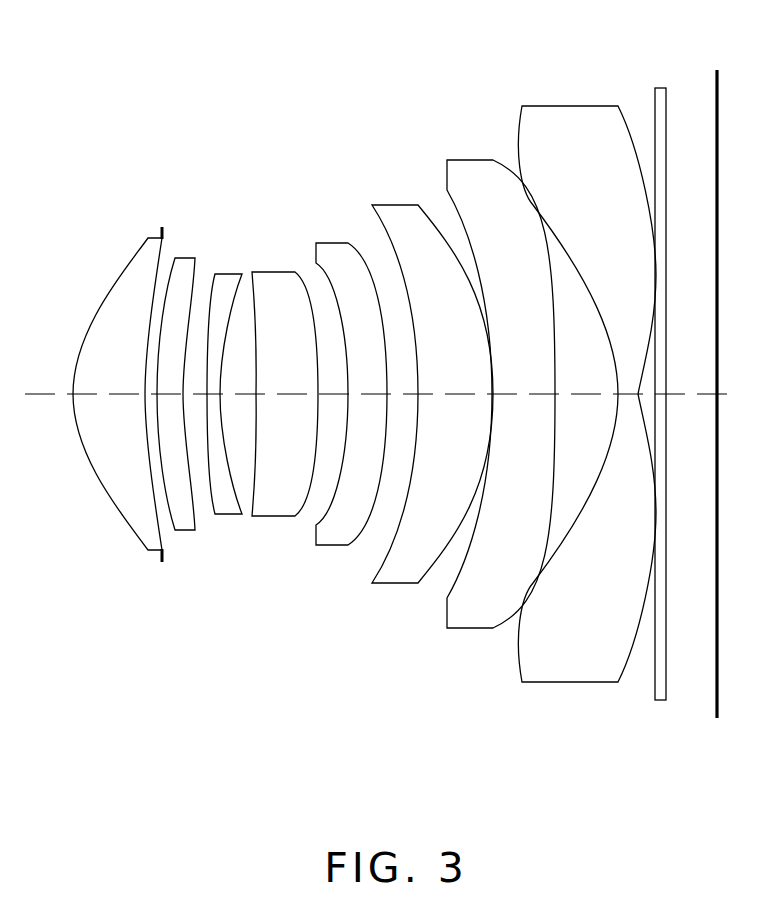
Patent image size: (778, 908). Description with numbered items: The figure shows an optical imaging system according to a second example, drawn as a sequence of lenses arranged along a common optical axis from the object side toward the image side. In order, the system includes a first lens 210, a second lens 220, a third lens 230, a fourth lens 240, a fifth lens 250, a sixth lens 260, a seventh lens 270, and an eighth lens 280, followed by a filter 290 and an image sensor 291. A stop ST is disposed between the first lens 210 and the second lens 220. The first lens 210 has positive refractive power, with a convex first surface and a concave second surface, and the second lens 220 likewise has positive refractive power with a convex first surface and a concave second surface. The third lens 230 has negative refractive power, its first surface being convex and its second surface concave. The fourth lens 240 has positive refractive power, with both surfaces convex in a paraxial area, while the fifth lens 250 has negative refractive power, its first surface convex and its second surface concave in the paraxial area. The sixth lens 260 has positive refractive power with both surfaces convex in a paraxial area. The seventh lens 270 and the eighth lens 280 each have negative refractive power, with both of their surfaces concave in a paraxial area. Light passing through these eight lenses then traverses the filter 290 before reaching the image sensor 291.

The first lens 210 is at (128, 273).
The stop ST is at (162, 228).
The second lens 220 is at (183, 260).
The third lens 230 is at (230, 275).
The fourth lens 240 is at (275, 274).
The fifth lens 250 is at (330, 250).
The sixth lens 260 is at (392, 207).
The seventh lens 270 is at (470, 164).
The eighth lens 280 is at (570, 115).
The filter 290 is at (657, 88).
The image sensor 291 is at (717, 70).